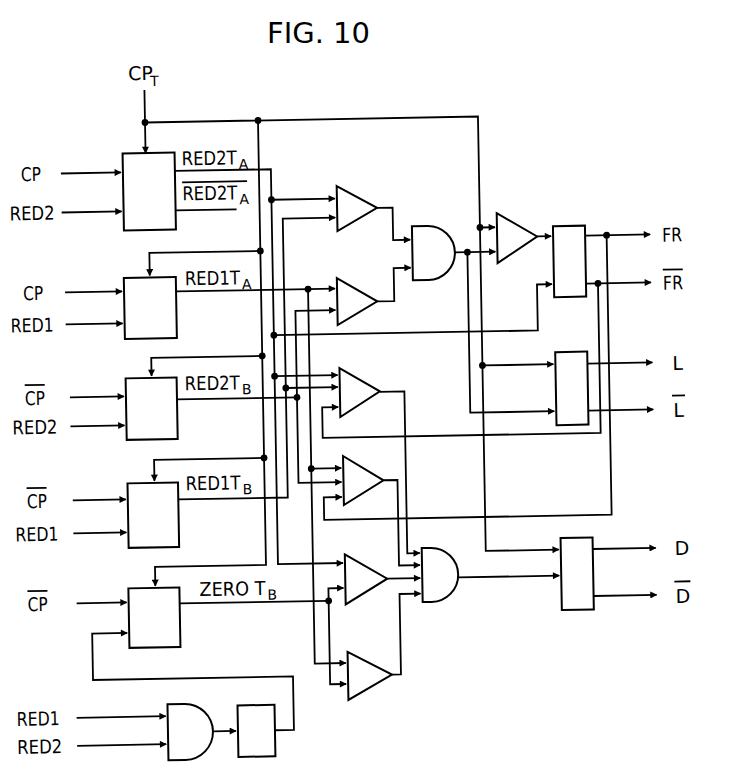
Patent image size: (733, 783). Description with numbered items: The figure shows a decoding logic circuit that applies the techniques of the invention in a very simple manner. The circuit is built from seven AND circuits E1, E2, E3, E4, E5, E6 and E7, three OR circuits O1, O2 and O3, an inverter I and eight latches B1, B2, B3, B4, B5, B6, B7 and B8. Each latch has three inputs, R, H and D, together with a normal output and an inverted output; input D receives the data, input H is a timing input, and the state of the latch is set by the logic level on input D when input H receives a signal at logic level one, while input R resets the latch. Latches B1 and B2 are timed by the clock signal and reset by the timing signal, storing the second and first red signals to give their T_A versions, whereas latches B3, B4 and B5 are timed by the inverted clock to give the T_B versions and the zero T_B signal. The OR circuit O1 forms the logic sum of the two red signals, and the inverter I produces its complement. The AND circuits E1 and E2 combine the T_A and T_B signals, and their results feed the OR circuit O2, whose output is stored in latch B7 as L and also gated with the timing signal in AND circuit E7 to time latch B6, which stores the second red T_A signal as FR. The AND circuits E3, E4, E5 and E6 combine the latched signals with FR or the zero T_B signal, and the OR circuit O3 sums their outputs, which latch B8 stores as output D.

The latch B1 is at (149, 191).
The latch B2 is at (150, 308).
The latch B3 is at (152, 408).
The latch B4 is at (153, 514).
The latch B5 is at (154, 617).
The latch B6 is at (569, 262).
The latch B7 is at (571, 389).
The latch B8 is at (577, 574).
The AND circuit E1 is at (357, 208).
The AND circuit E2 is at (357, 301).
The AND circuit E3 is at (359, 392).
The AND circuit E4 is at (363, 480).
The AND circuit E5 is at (366, 579).
The AND circuit E6 is at (370, 675).
The AND circuit E7 is at (517, 237).
The OR circuit O1 is at (190, 731).
The OR circuit O2 is at (433, 252).
The OR circuit O3 is at (440, 574).
The inverter I is at (257, 731).